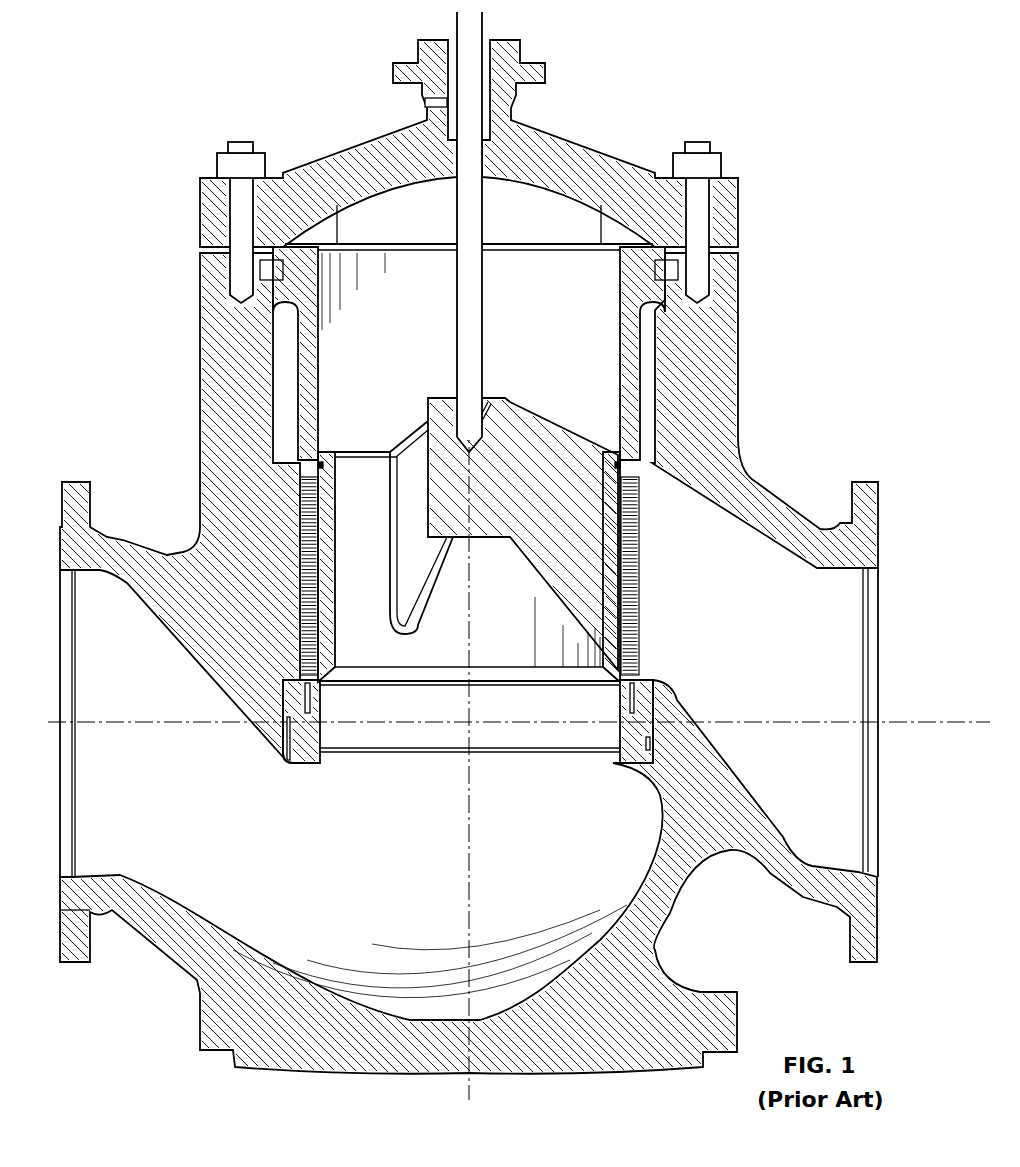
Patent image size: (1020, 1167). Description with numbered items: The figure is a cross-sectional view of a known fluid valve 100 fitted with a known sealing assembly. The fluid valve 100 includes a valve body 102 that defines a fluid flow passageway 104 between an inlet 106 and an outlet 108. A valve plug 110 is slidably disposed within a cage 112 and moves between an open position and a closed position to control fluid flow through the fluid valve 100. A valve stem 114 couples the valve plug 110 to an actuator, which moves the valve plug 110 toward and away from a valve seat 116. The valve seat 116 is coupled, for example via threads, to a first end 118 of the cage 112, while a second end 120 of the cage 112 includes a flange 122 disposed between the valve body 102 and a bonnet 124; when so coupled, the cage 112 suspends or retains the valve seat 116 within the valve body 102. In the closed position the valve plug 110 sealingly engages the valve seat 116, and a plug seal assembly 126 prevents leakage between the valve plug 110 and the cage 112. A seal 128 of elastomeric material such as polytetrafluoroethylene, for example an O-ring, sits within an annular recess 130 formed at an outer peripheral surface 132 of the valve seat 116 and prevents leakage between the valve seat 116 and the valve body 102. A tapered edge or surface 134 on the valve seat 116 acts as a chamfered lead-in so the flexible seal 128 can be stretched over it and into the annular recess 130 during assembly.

The fluid valve 100 is at (720, 76).
The valve body 102 is at (670, 913).
The fluid flow passageway 104 is at (317, 904).
The inlet 106 is at (57, 684).
The outlet 108 is at (878, 684).
The valve plug 110 is at (582, 457).
The cage 112 is at (632, 350).
The valve stem 114 is at (483, 18).
The valve seat 116 is at (620, 742).
The first end 118 is at (305, 690).
The second end 120 is at (620, 258).
The flange 122 is at (663, 273).
The bonnet 124 is at (584, 147).
The plug seal assembly 126 is at (320, 465).
The seal 128 is at (288, 740).
The annular recess 130 is at (288, 733).
The outer peripheral surface 132 is at (653, 730).
The tapered edge or surface 134 is at (648, 750).